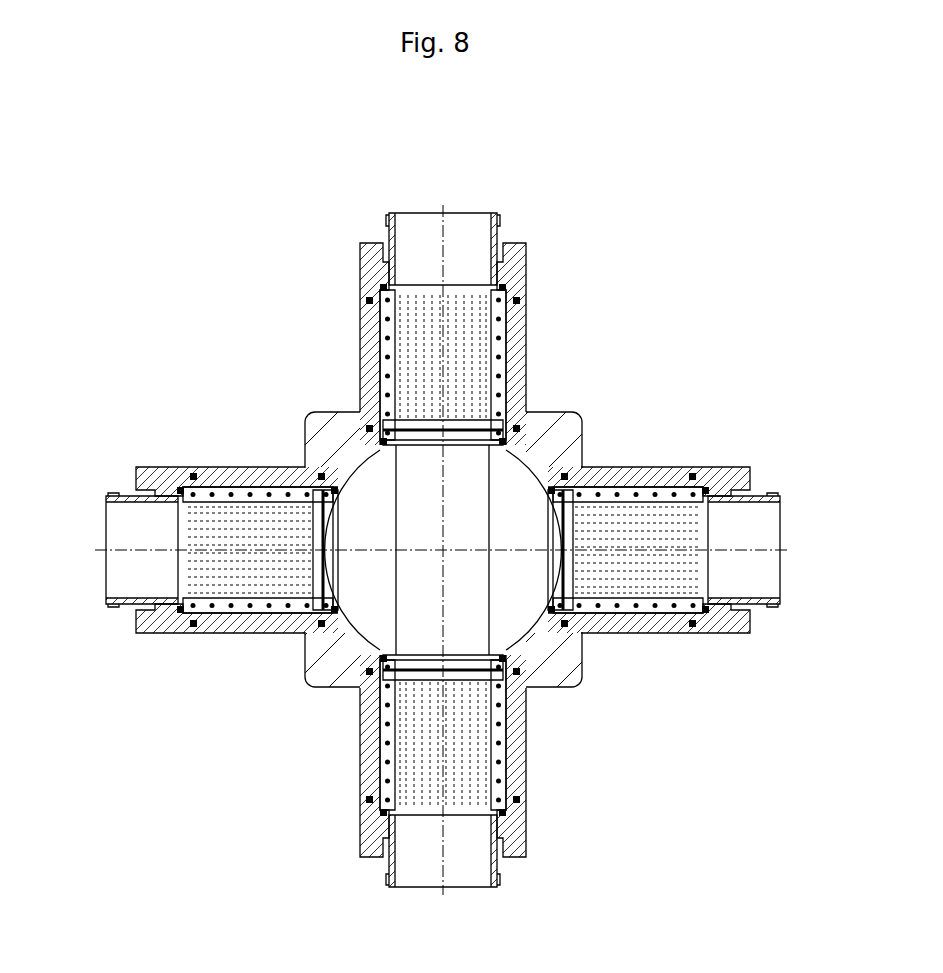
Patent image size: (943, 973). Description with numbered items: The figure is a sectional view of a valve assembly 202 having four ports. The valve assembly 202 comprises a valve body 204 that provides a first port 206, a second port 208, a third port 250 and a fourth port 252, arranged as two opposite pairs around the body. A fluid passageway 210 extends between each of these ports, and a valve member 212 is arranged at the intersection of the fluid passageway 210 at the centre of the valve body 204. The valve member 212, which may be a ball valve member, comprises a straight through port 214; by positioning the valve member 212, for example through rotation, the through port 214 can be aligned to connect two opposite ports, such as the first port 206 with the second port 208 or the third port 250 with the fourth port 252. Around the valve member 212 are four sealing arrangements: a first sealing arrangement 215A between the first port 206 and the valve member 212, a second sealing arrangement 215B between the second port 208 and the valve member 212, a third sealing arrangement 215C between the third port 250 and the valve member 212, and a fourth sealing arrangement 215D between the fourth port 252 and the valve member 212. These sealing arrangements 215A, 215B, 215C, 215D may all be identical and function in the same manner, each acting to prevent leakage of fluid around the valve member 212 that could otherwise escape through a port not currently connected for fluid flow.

The valve assembly 202 is at (177, 292).
The valve body 204 is at (560, 662).
The first port 206 is at (496, 215).
The second port 208 is at (497, 888).
The fluid passageway 210 is at (482, 340).
The valve member 212 is at (517, 463).
The through port 214 is at (415, 520).
The first sealing arrangement 215A is at (360, 400).
The second sealing arrangement 215B is at (370, 704).
The third sealing arrangement 215C is at (596, 462).
The fourth sealing arrangement 215D is at (280, 627).
The third port 250 is at (770, 497).
The fourth port 252 is at (105, 605).